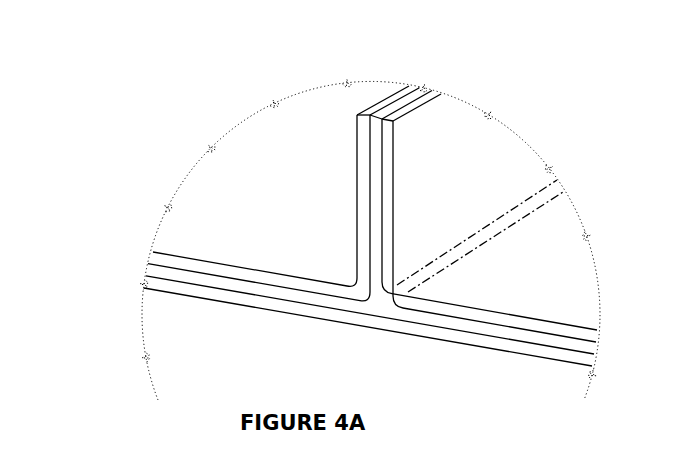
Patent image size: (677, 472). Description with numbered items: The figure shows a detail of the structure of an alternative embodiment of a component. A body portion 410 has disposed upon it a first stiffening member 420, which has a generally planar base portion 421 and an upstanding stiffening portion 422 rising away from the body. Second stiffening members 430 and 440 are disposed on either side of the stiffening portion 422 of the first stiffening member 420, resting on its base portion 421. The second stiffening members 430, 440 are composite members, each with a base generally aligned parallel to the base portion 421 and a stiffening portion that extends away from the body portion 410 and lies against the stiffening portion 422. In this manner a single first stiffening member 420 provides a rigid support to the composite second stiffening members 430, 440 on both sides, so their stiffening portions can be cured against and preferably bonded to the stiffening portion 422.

The body portion 410 is at (173, 291).
The first stiffening member 420 is at (375, 298).
The base portion 421 is at (470, 325).
The stiffening portion 422 is at (376, 162).
The second stiffening member 430 is at (462, 222).
The second stiffening member 440 is at (303, 224).